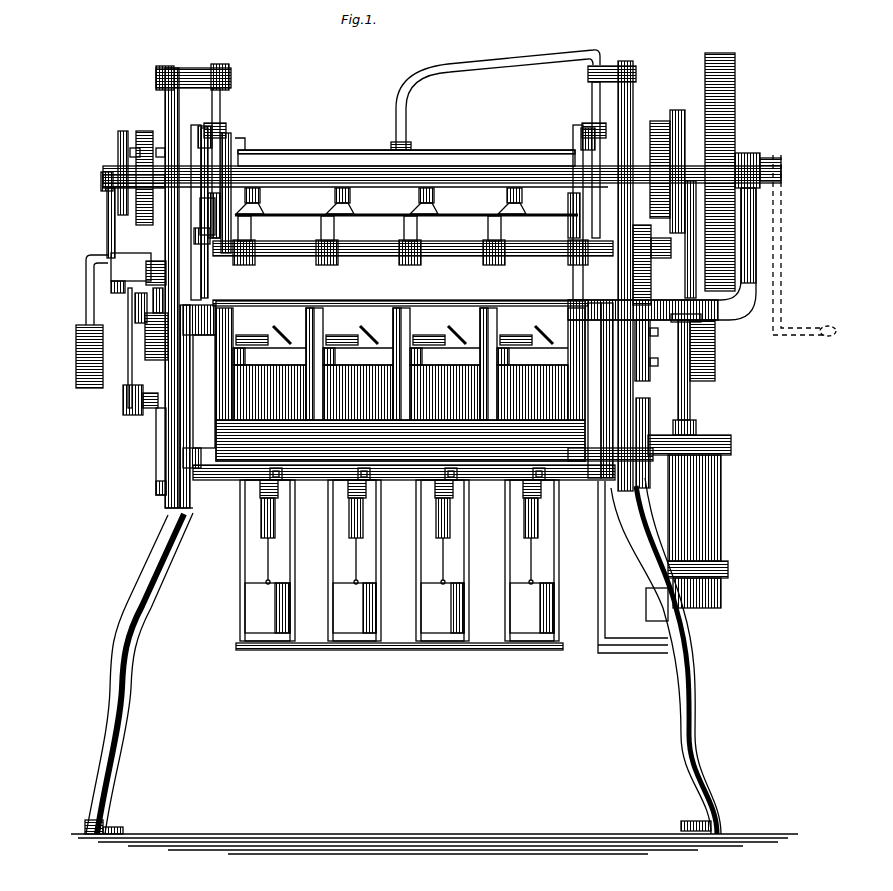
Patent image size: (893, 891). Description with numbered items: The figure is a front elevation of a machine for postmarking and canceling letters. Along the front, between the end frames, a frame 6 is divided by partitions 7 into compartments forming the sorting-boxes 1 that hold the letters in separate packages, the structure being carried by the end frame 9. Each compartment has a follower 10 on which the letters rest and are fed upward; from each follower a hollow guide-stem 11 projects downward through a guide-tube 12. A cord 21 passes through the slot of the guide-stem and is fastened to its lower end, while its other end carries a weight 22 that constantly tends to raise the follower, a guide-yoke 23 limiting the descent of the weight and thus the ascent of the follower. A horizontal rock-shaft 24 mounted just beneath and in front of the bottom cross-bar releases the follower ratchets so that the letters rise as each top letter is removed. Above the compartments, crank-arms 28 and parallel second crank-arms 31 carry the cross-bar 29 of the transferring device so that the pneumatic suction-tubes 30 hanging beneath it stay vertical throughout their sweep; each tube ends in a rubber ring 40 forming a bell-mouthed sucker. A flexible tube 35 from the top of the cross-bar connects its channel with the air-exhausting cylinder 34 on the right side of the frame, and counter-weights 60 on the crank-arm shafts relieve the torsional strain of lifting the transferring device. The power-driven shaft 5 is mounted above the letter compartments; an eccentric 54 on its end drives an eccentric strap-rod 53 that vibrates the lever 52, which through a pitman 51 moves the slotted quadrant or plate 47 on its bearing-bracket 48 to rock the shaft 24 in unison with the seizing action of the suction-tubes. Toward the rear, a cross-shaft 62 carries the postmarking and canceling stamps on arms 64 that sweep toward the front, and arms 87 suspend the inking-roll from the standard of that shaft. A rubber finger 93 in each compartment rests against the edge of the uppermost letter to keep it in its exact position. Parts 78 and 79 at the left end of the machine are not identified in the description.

The sorting-boxes 1 is at (384, 329).
The power crank-shaft 5 is at (472, 158).
The frame 6 is at (400, 380).
The partitions 7 is at (401, 364).
The end frame 9 is at (199, 386).
The follower 10 is at (400, 384).
The hollow guide-stem 11 is at (408, 518).
The guide-tube 12 is at (396, 483).
The cord 21 is at (398, 561).
The weight 22 is at (399, 608).
The guide-yoke 23 is at (399, 565).
The horizontal rock-shaft 24 is at (404, 478).
The crank-arms 28 is at (394, 215).
The cross-bar of the transferring device 29 is at (405, 150).
The pneumatic suction-tubes 30 is at (387, 201).
The second crank-arm 31 is at (398, 204).
The air-exhausting cylinder 34 is at (697, 521).
The flexible tube 35 is at (495, 100).
The rubber ring 40 is at (406, 210).
The slotted quadrant or plate 47 is at (188, 452).
The bearing-bracket 48 is at (129, 400).
The pitman 51 is at (121, 348).
The lever 52 is at (127, 312).
The eccentric strap-rod 53 is at (139, 306).
The eccentric 54 is at (141, 168).
The counter-weights 60 is at (396, 374).
The cross-shaft 62 is at (413, 241).
The stamp arms 64 is at (464, 207).
The shaft 78 is at (125, 182).
The rod 79 is at (100, 256).
The inking-roll suspending arms 87 is at (396, 151).
The rubber finger 93 is at (418, 333).